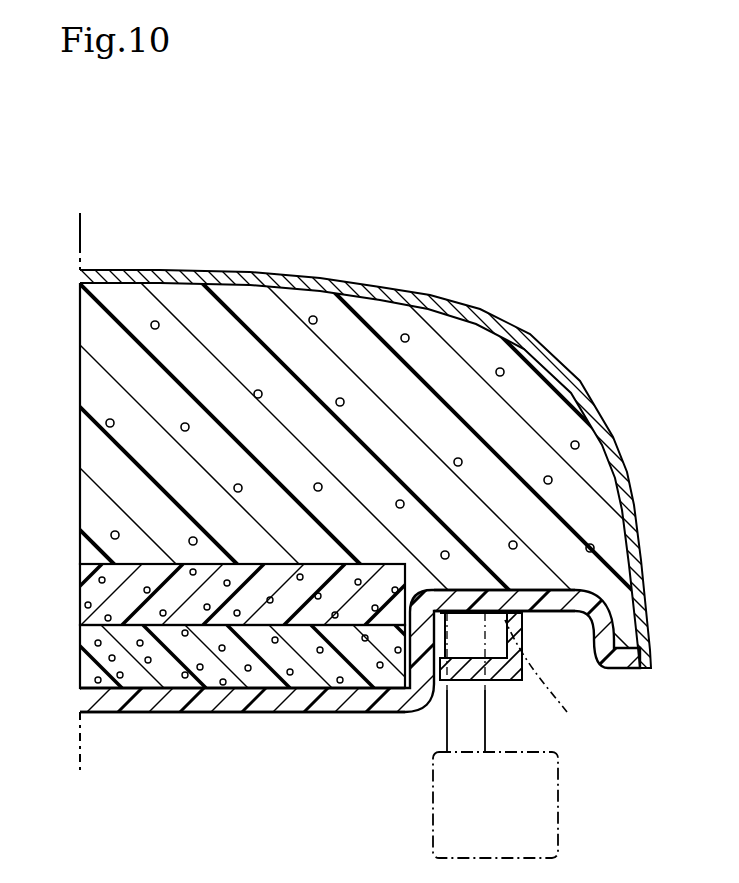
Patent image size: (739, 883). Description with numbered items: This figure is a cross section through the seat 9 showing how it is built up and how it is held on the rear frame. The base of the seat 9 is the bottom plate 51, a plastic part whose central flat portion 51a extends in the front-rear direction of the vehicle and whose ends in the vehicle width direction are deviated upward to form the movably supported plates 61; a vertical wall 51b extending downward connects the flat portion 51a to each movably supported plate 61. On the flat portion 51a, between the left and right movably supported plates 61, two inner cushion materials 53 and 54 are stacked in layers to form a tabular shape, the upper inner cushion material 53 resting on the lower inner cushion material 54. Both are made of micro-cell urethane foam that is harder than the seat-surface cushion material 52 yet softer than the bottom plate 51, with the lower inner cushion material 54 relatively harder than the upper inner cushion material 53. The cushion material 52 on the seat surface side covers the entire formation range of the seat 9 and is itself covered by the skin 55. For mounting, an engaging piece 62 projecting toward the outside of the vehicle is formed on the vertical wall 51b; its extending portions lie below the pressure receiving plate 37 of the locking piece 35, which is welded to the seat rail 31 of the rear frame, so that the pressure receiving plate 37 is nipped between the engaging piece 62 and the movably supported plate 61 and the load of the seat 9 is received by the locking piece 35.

The seat 9 is at (545, 348).
The seat rail 31 is at (560, 837).
The locking piece 35 is at (445, 728).
The pressure receiving plate 37 is at (555, 676).
The bottom plate 51 is at (389, 633).
The flat portion 51a is at (213, 700).
The vertical wall 51b is at (445, 632).
The cushion material 52 is at (218, 316).
The inner cushion material 53 is at (97, 594).
The inner cushion material 54 is at (92, 673).
The skin 55 is at (417, 292).
The movably supported plate 61 is at (535, 607).
The engaging piece 62 is at (513, 670).